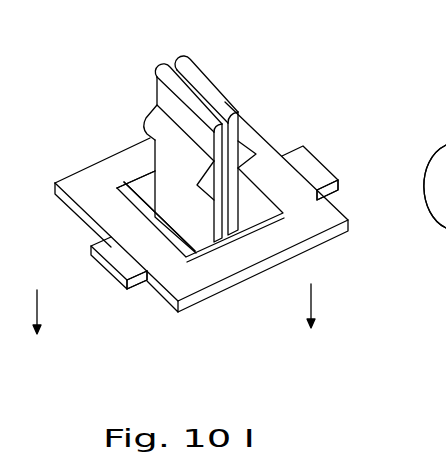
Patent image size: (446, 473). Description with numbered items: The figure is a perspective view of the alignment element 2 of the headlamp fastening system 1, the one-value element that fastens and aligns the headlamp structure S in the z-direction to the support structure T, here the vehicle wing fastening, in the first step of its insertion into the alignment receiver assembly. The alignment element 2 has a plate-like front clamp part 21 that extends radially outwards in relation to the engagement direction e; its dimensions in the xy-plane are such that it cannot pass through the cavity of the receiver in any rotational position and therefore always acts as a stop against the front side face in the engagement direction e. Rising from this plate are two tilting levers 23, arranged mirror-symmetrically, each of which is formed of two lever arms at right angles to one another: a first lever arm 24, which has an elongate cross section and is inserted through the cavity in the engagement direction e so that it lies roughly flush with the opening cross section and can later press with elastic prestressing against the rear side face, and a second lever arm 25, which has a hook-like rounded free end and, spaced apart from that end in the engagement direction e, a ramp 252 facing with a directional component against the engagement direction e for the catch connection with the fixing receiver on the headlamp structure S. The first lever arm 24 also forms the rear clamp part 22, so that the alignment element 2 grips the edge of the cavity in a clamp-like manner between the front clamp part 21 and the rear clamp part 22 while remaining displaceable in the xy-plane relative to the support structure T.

The headlamp fastening system 1 is at (371, 162).
The alignment element 2 is at (270, 102).
The front clamp part 21 is at (343, 236).
The rear clamp part 22 is at (304, 146).
The tilting lever 23 is at (151, 66).
The first lever arm 24 is at (223, 100).
The second lever arm 25 is at (345, 185).
The ramp 252 is at (149, 112).
The headlamp structure S is at (138, 190).
The support structure T is at (438, 234).
The engagement direction e is at (166, 307).